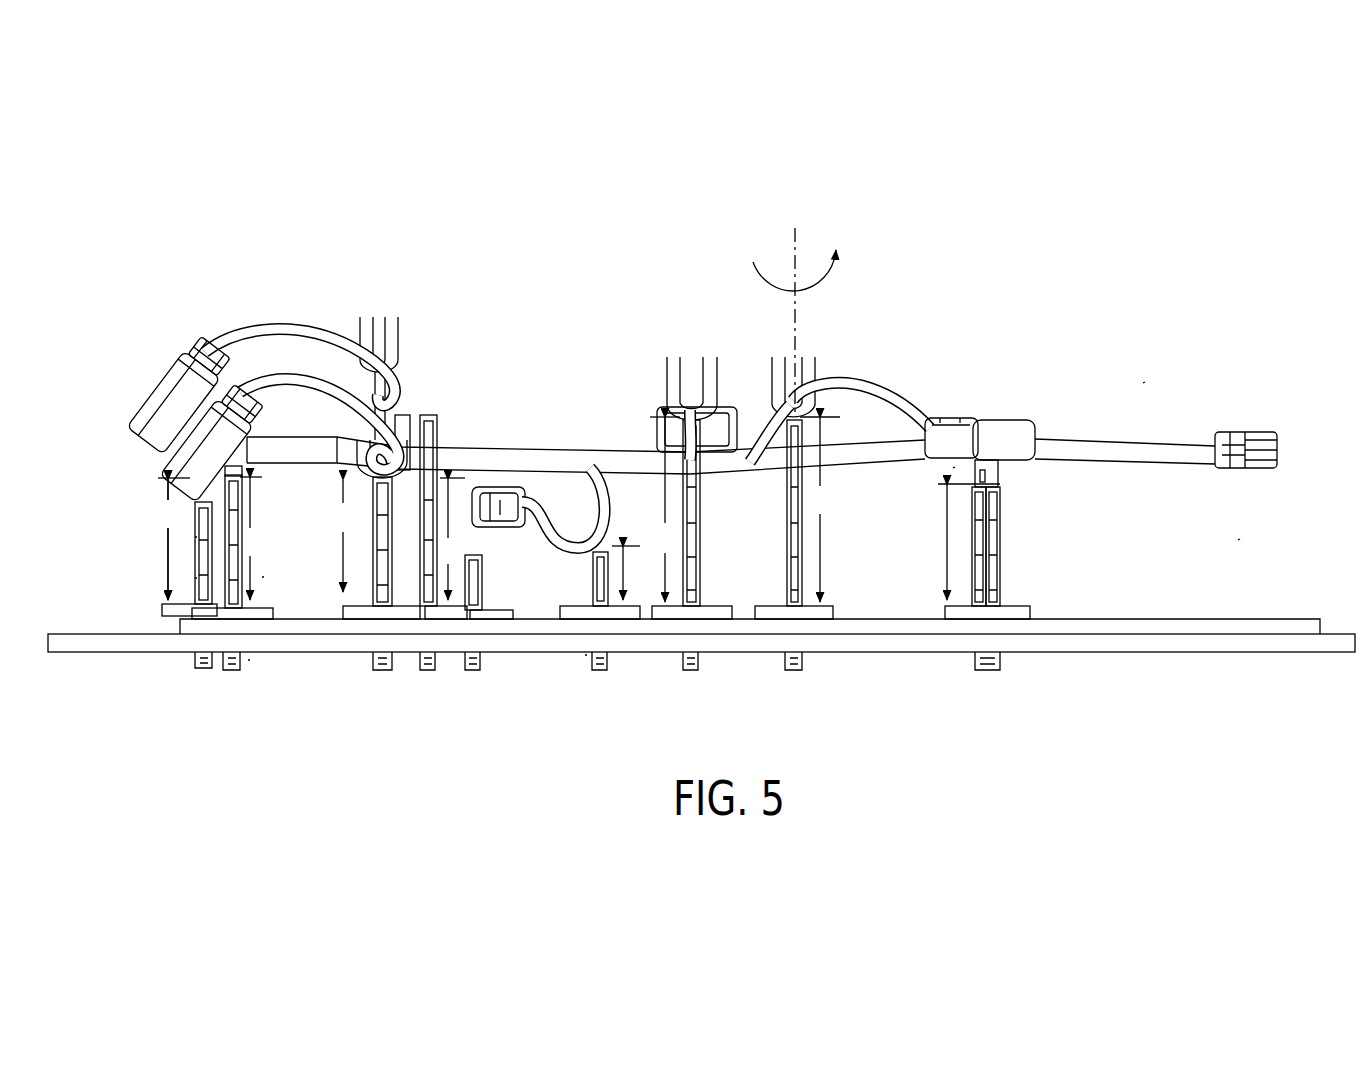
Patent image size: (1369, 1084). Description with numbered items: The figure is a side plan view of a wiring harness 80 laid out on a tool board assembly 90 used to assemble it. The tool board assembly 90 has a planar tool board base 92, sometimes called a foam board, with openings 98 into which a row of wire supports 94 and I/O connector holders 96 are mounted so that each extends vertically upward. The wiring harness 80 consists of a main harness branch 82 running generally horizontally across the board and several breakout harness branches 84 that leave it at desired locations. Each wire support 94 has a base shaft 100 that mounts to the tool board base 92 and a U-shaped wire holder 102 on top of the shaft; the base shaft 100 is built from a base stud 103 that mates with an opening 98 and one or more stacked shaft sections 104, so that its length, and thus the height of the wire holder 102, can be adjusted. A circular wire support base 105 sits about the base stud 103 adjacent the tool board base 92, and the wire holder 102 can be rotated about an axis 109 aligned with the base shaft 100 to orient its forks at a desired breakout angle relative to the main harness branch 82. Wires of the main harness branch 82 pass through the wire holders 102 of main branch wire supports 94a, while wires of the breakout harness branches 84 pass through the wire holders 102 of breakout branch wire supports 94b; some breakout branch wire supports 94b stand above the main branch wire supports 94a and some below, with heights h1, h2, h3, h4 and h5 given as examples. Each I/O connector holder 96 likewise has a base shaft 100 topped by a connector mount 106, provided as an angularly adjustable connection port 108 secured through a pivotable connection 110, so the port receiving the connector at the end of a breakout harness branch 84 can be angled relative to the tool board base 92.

The wiring harness 80 is at (1143, 383).
The main harness branch 82 is at (518, 449).
The breakout harness branches 84 is at (283, 336).
The tool board assembly 90 is at (1238, 540).
The tool board base 92 is at (1272, 628).
The wire supports 94 is at (597, 573).
The main branch wire supports 94a is at (415, 578).
The breakout branch wire supports 94b is at (624, 544).
The I/O connector holders 96 is at (258, 515).
The openings 98 is at (248, 660).
The base shaft 100 is at (262, 577).
The wire holder 102 is at (388, 317).
The base stud 103 is at (470, 672).
The shaft sections 104 is at (195, 578).
The wire support base 105 is at (490, 607).
The connector mount 106 is at (953, 468).
The angularly adjustable connection port 108 is at (165, 455).
The axis 109 is at (793, 255).
The pivotable connection 110 is at (240, 468).
The height h1 is at (745, 509).
The height h2 is at (620, 538).
The height h3 is at (633, 573).
The height h4 is at (398, 539).
The height h5 is at (173, 539).